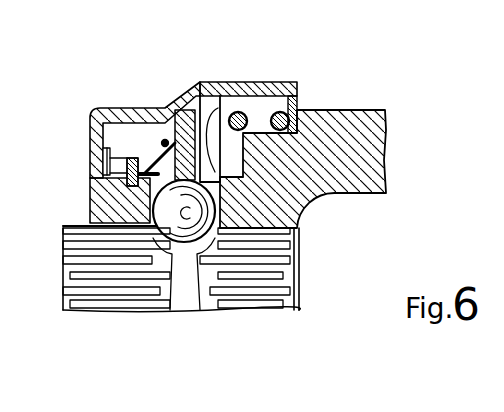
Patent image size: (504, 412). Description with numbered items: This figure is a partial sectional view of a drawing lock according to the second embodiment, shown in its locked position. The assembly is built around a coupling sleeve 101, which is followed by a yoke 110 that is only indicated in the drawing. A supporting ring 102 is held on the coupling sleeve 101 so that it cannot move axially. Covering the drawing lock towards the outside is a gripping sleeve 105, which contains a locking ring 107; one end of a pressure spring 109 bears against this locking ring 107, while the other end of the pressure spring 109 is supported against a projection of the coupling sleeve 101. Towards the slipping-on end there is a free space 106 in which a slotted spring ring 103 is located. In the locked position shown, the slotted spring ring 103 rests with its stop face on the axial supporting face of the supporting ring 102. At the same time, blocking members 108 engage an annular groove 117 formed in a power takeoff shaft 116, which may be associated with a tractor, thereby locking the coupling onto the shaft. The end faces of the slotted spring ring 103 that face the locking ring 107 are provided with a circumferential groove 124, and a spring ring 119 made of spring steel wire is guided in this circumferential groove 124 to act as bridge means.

The coupling sleeve 101 is at (107, 201).
The supporting ring 102 is at (100, 167).
The slotted spring ring 103 is at (120, 135).
The gripping sleeve 105 is at (243, 87).
The free space 106 is at (145, 128).
The locking ring 107 is at (188, 140).
The blocking members 108 is at (183, 232).
The pressure spring 109 is at (281, 112).
The yoke 110 is at (343, 135).
The power takeoff shaft 116 is at (280, 262).
The annular groove 117 is at (188, 285).
The spring ring 119 is at (168, 140).
The circumferential groove 124 is at (213, 85).